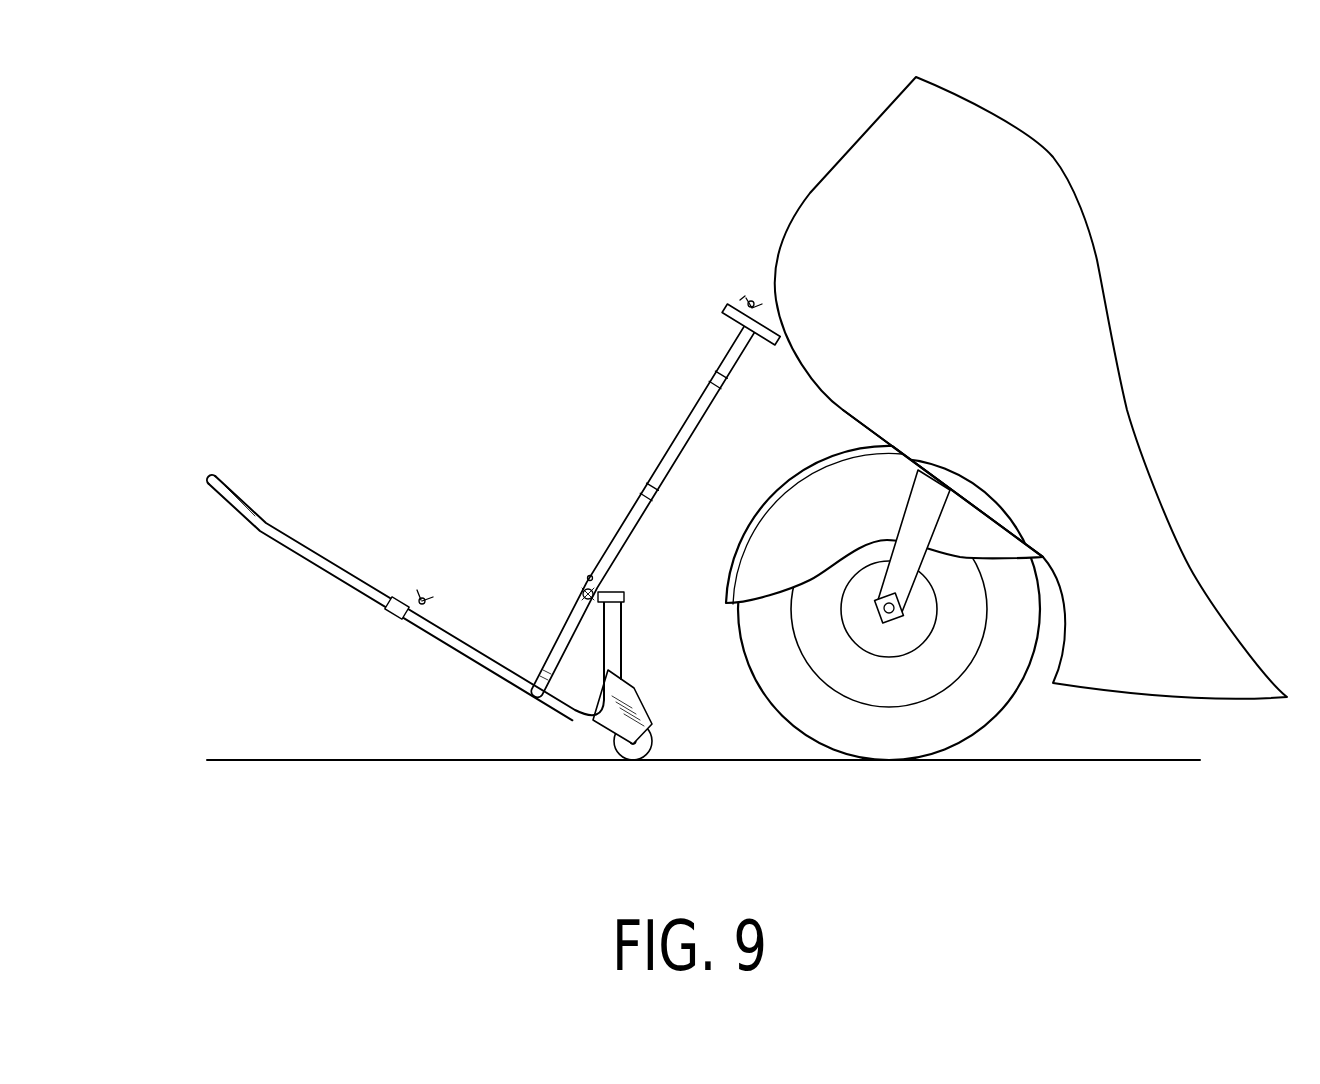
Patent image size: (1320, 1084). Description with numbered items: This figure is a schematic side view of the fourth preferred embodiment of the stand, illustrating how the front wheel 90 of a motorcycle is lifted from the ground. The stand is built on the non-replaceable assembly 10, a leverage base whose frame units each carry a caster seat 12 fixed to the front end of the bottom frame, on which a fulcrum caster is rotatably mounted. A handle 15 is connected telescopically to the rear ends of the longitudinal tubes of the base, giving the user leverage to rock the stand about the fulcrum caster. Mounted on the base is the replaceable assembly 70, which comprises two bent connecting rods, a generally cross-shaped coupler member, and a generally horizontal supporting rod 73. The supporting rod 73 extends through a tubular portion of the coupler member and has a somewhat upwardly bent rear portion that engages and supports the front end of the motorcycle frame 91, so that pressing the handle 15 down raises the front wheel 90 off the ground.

The non-replaceable assembly 10 is at (457, 687).
The caster seat 12 is at (593, 722).
The handle 15 is at (297, 540).
The replaceable assembly 70 is at (643, 440).
The supporting rod 73 is at (763, 353).
The front wheel 90 is at (860, 762).
The motorcycle frame 91 is at (793, 277).